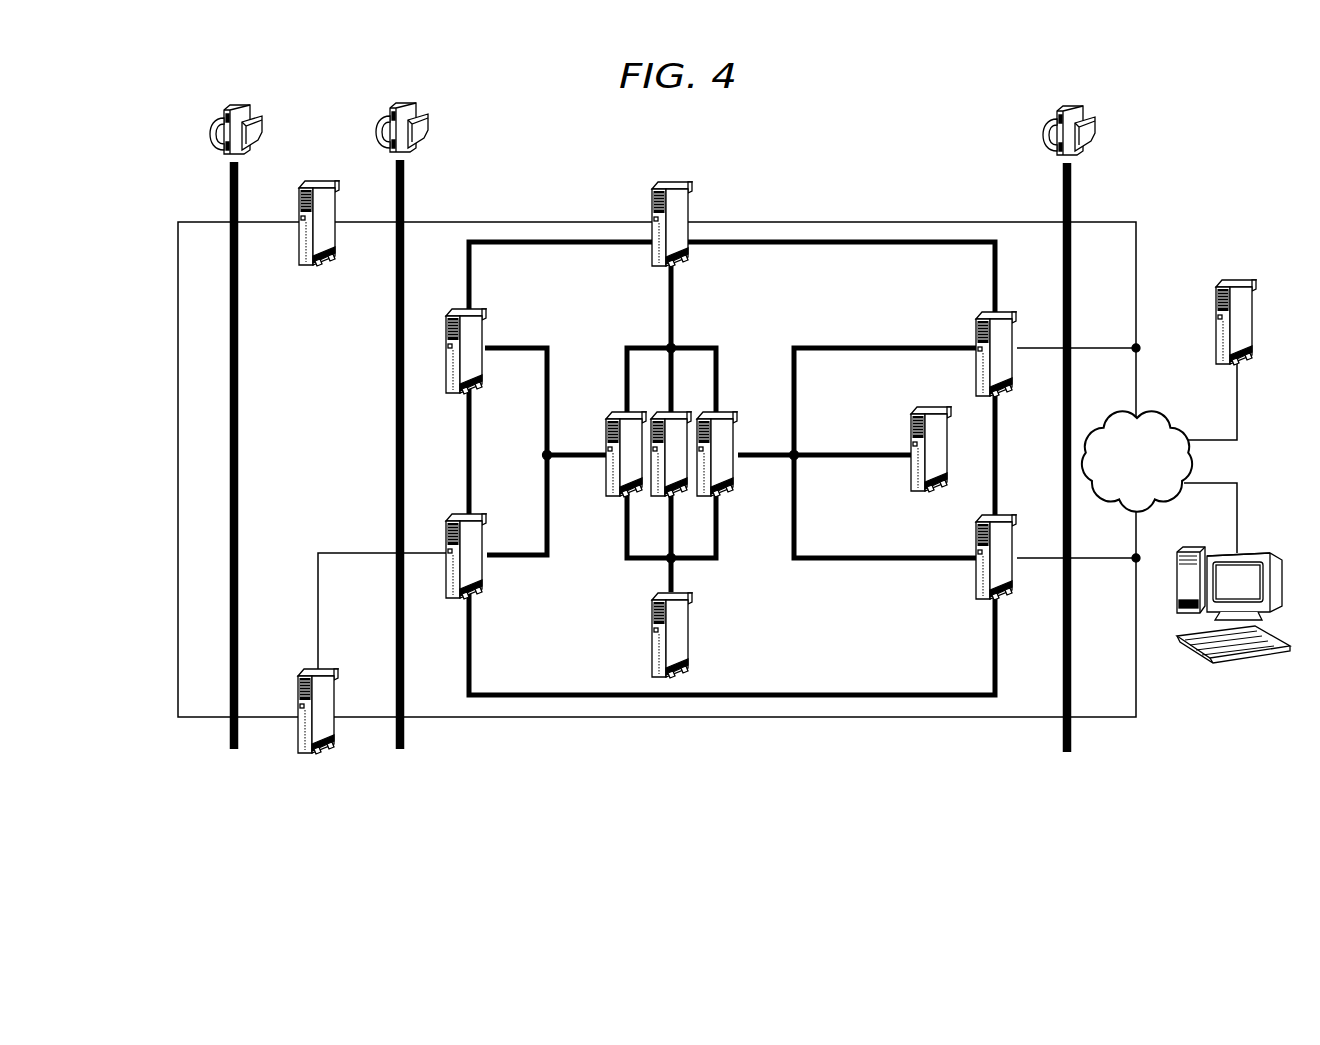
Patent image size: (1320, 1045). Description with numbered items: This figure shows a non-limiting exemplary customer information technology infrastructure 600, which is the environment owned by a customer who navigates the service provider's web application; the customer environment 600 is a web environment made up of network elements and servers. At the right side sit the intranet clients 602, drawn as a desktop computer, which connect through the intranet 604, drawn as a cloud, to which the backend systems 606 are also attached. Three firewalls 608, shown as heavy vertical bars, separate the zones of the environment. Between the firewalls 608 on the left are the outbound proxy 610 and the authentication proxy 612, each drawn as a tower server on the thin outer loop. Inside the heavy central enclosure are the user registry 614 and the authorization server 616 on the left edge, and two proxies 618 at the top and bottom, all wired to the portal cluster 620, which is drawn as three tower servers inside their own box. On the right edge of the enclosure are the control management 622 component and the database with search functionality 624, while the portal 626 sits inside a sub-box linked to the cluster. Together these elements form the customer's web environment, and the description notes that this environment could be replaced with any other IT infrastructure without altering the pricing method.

The customer information technology infrastructure 600 is at (1252, 128).
The intranet clients 602 is at (1254, 658).
The intranet 604 is at (1164, 422).
The backend systems 606 is at (1238, 278).
The firewalls 608 is at (1128, 148).
The outbound proxy 610 is at (312, 266).
The authentication proxy 612 is at (313, 754).
The user registry 614 is at (485, 334).
The authorization server 616 is at (486, 584).
The proxies 618 is at (686, 632).
The portal cluster 620 is at (728, 410).
The control management 622 is at (977, 329).
The database with search functionality 624 is at (977, 584).
The portal 626 is at (912, 431).